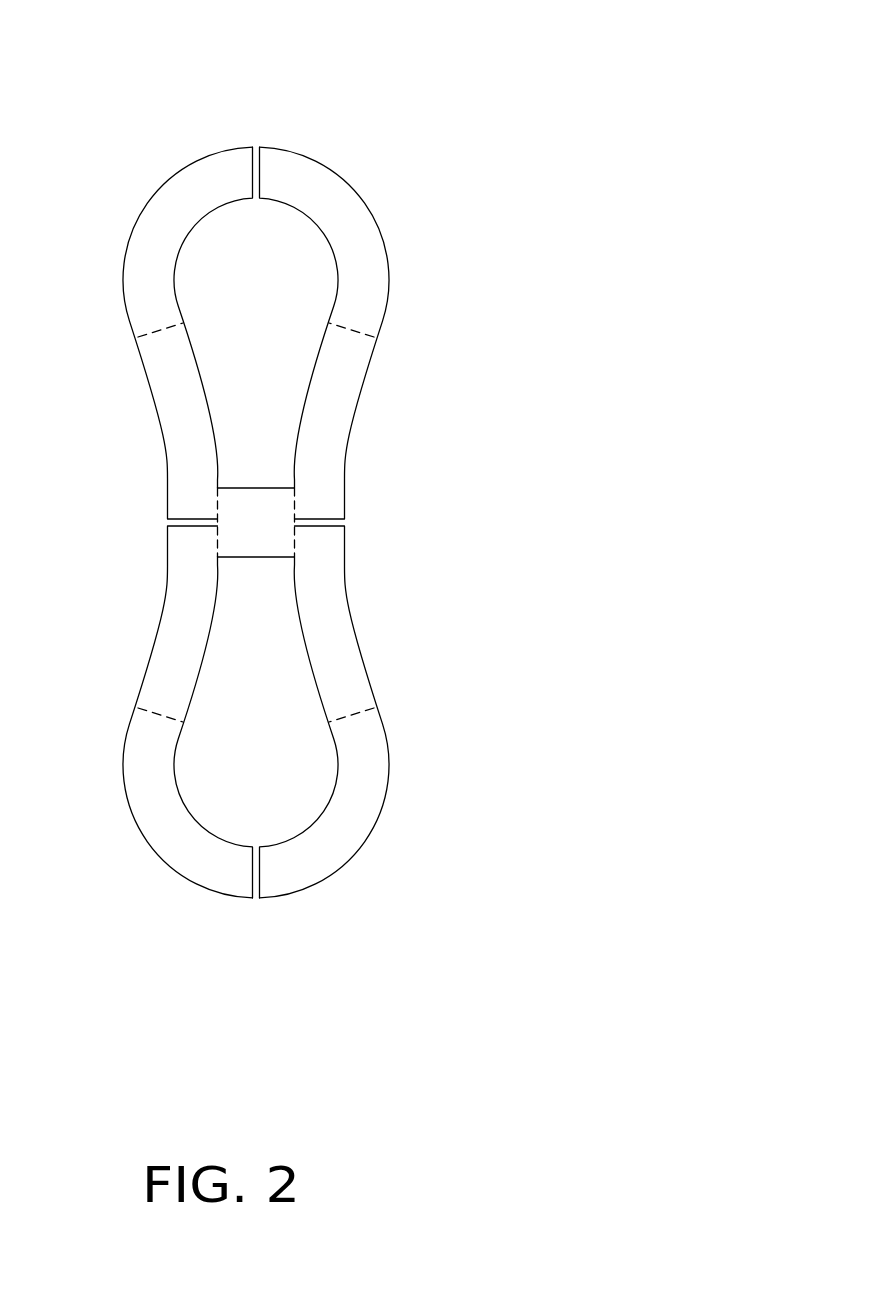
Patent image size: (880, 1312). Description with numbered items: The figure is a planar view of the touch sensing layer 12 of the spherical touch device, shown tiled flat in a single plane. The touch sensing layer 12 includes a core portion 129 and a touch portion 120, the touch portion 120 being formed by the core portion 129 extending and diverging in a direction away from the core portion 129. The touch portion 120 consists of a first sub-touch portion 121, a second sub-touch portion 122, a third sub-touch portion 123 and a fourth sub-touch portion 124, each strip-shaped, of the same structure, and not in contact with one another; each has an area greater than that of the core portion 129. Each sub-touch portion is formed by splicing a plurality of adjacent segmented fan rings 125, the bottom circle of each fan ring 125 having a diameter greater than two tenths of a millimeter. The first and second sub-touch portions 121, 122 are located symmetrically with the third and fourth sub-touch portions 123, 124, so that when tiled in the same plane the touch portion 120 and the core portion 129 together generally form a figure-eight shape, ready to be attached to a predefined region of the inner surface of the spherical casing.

The touch sensing layer 12 is at (218, 64).
The touch portion 120 is at (335, 522).
The first sub-touch portion 121 is at (330, 462).
The second sub-touch portion 122 is at (198, 439).
The third sub-touch portion 123 is at (326, 592).
The fourth sub-touch portion 124 is at (187, 666).
The segmented fan ring 125 is at (359, 239).
The core portion 129 is at (240, 512).